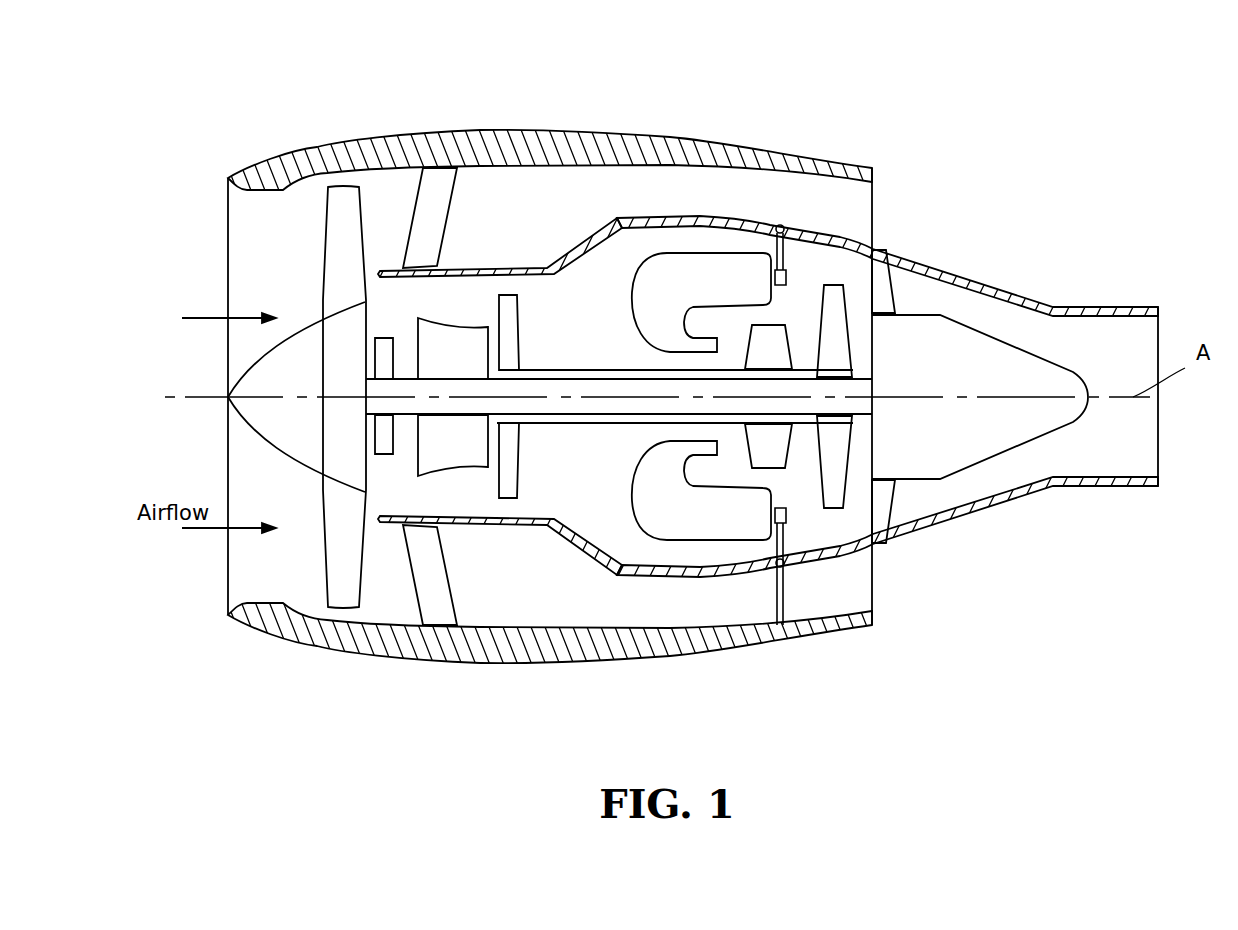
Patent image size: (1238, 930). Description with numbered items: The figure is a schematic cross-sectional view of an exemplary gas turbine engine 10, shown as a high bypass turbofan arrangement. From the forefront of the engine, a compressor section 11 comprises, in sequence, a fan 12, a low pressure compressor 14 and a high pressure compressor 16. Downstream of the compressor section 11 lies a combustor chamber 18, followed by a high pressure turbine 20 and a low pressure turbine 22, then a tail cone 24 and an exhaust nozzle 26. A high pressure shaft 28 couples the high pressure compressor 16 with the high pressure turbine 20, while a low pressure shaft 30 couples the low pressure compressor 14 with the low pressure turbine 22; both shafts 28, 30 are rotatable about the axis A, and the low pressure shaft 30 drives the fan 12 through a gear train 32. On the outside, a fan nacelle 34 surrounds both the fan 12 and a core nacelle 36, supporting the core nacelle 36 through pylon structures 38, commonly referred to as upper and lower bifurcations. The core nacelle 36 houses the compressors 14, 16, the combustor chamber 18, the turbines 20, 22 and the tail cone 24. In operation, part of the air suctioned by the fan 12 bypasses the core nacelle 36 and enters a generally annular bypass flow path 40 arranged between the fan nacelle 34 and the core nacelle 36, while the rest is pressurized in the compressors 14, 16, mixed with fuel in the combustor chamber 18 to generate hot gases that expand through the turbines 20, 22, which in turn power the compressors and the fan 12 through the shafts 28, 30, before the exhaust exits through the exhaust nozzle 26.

The gas turbine engine 10 is at (181, 165).
The compressor section 11 is at (393, 197).
The fan 12 is at (350, 275).
The low pressure compressor 14 is at (455, 366).
The high pressure compressor 16 is at (503, 318).
The combustor chamber 18 is at (698, 268).
The high pressure turbine 20 is at (775, 340).
The low pressure turbine 22 is at (848, 282).
The tail cone 24 is at (1025, 358).
The exhaust nozzle 26 is at (973, 308).
The high pressure shaft 28 is at (580, 370).
The low pressure shaft 30 is at (542, 379).
The gear train 32 is at (383, 362).
The fan nacelle 34 is at (462, 150).
The core nacelle 36 is at (575, 232).
The pylon structures 38 is at (437, 197).
The bypass flow path 40 is at (668, 617).